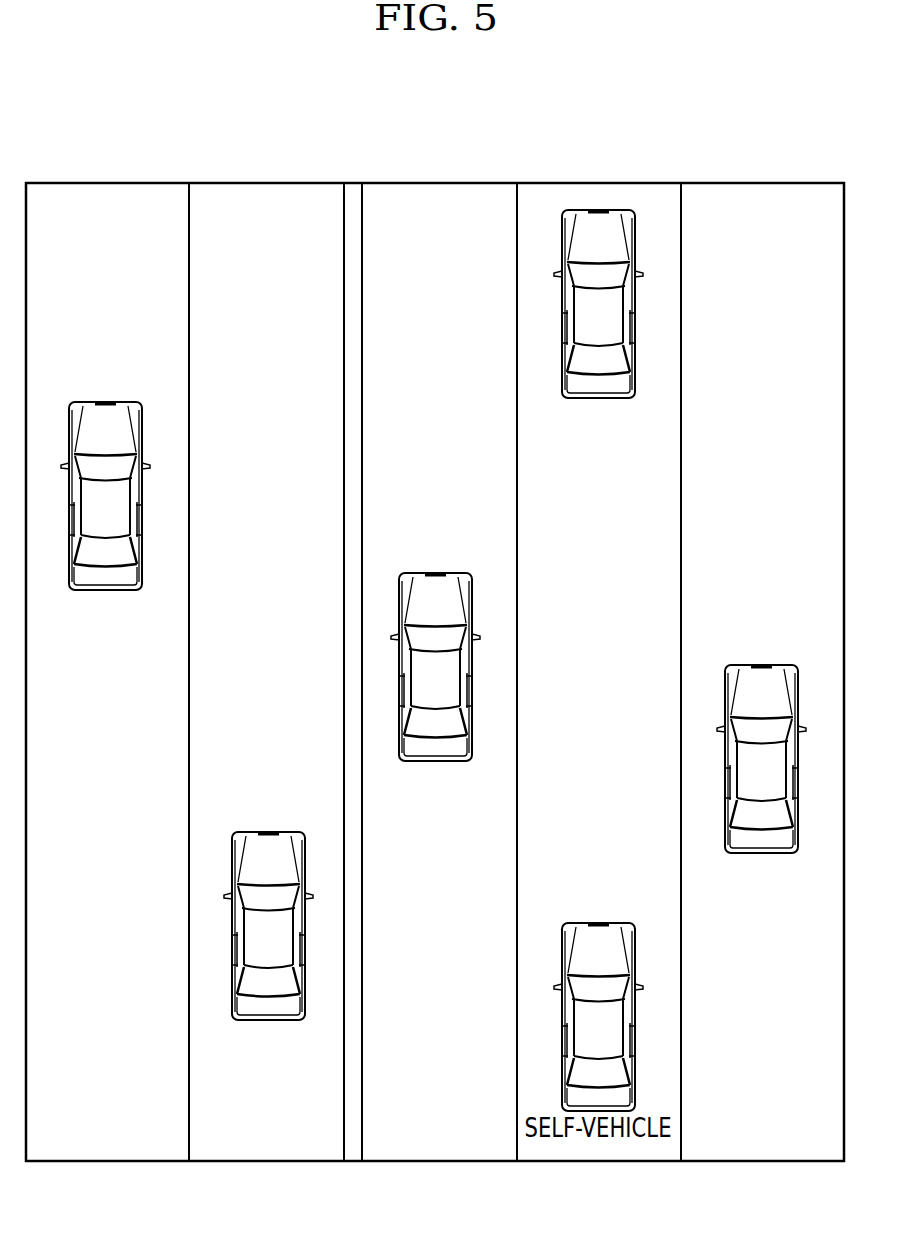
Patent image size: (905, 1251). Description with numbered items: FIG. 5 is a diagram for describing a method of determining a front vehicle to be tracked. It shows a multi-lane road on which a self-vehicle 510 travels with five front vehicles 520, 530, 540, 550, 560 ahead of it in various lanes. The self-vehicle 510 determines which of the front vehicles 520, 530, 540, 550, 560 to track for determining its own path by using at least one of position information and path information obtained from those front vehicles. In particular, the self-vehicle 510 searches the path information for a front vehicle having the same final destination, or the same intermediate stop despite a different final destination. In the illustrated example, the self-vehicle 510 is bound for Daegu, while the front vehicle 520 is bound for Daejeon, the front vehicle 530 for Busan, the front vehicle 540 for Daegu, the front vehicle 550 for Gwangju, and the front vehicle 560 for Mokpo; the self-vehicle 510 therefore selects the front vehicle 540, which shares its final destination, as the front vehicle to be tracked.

The self-vehicle 510 is at (592, 922).
The front vehicle 520 is at (761, 664).
The front vehicle 530 is at (434, 572).
The front vehicle 540 is at (265, 831).
The front vehicle 550 is at (100, 401).
The front vehicle 560 is at (597, 398).